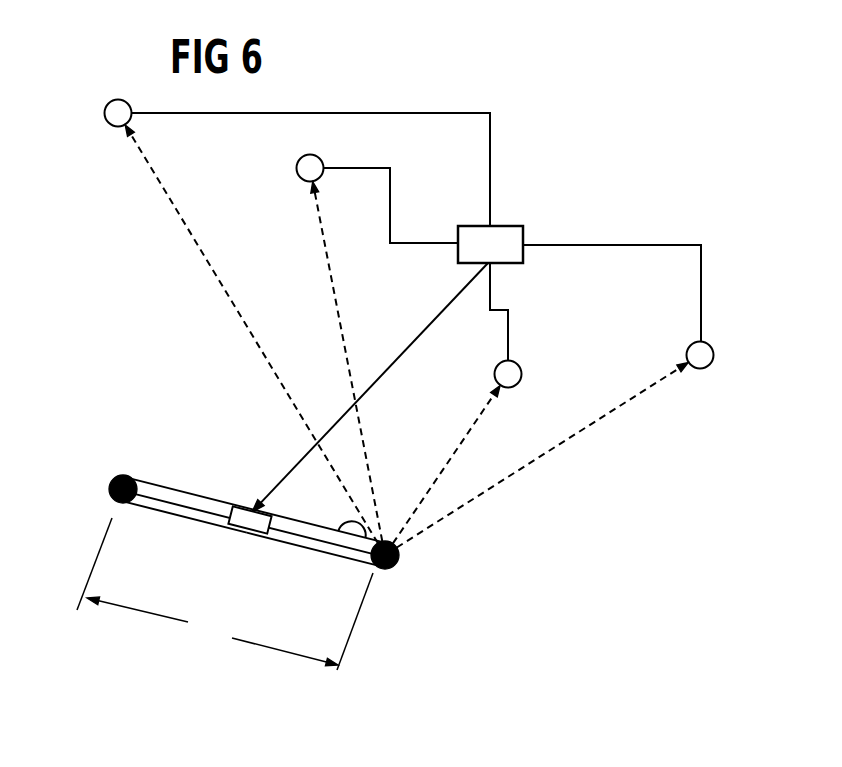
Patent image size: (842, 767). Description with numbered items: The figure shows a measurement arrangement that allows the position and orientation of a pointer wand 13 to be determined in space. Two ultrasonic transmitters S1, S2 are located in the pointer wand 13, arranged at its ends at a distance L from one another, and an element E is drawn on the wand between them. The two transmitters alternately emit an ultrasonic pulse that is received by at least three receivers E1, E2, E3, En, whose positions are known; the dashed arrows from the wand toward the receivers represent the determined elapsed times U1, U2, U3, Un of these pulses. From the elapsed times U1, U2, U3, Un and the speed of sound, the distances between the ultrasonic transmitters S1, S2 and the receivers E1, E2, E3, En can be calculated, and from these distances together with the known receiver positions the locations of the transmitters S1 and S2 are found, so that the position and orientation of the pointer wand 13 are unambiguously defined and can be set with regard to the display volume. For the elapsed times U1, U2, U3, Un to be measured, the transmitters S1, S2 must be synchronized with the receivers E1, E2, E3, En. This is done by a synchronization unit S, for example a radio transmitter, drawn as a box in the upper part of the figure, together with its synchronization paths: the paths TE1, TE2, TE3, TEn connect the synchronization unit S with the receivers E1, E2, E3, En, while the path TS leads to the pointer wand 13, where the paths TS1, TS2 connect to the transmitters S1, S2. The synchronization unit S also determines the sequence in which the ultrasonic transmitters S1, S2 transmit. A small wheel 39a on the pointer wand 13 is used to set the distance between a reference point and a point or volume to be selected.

The receiver En is at (100, 110).
The receiver E1 is at (294, 168).
The receiver E2 is at (528, 375).
The receiver E3 is at (719, 360).
The synchronization unit S is at (490, 244).
The synchronization path TEn is at (490, 156).
The synchronization path TE1 is at (392, 205).
The synchronization path TE2 is at (492, 287).
The synchronization path TE3 is at (632, 245).
The synchronization path TS is at (370, 387).
The elapsed time Un is at (251, 334).
The elapsed time U1 is at (342, 362).
The elapsed time U2 is at (448, 465).
The elapsed time U3 is at (542, 455).
The ultrasonic transmitter S1 is at (110, 502).
The ultrasonic transmitter S2 is at (396, 569).
The pointer wand 13 is at (165, 483).
The electronics unit E is at (238, 507).
The synchronization path TS1 is at (193, 509).
The synchronization path TS2 is at (316, 540).
The small wheel 39a is at (339, 514).
The distance L is at (225, 594).